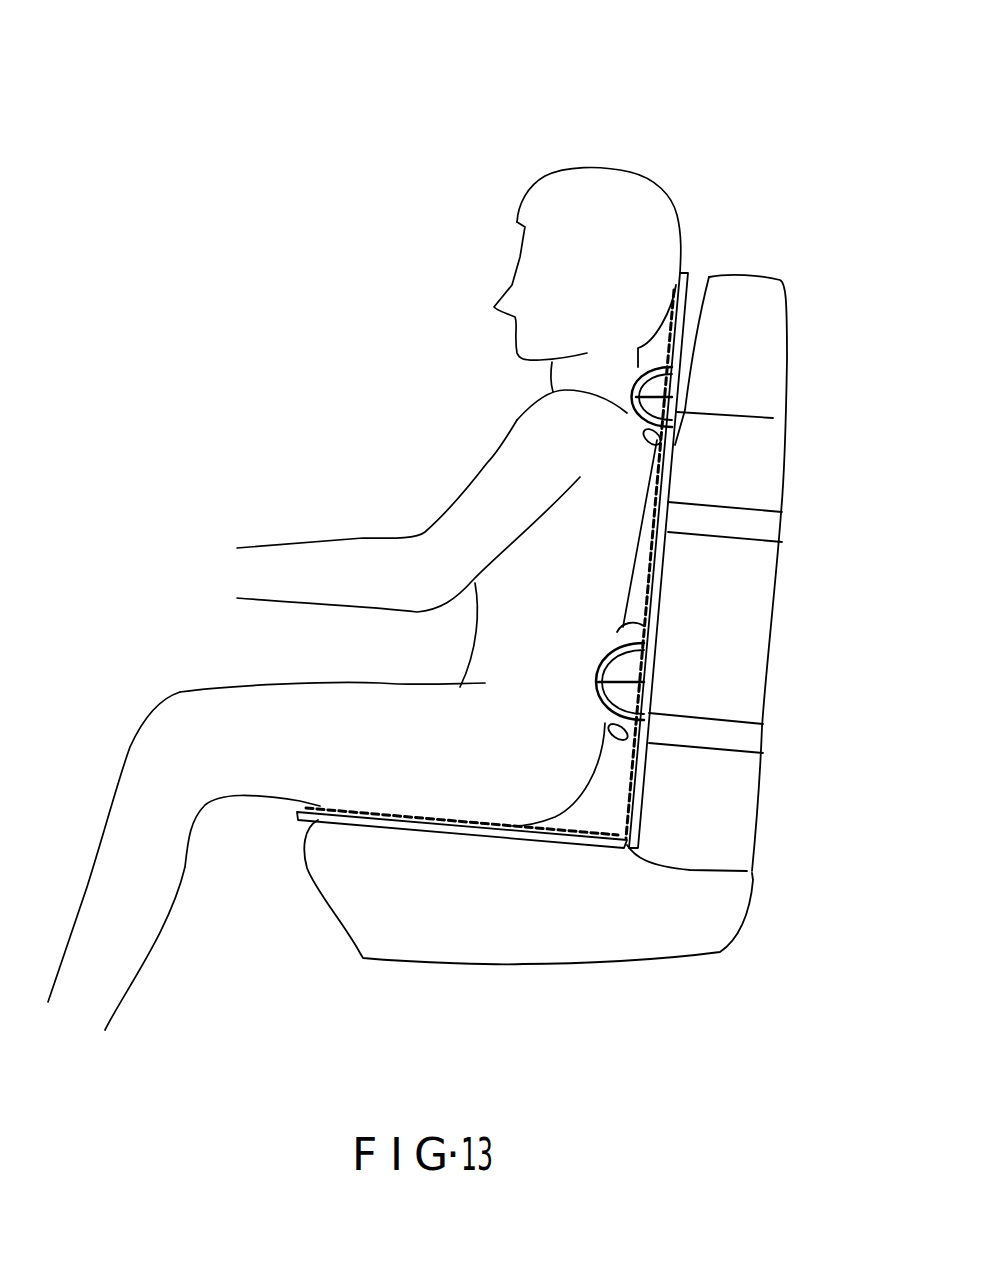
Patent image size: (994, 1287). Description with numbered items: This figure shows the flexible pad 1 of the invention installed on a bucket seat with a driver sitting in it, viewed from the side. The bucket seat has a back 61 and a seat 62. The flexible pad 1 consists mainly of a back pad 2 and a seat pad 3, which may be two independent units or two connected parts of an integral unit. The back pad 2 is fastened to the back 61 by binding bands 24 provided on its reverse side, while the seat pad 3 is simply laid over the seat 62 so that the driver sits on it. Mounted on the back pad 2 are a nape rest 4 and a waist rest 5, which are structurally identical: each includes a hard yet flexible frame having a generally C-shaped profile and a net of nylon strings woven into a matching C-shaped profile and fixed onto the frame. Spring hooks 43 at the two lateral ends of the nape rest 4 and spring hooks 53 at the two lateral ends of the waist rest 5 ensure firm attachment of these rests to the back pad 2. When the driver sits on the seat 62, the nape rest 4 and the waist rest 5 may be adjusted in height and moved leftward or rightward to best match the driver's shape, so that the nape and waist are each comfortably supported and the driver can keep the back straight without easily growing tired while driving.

The flexible pad 1 is at (727, 108).
The back pad 2 is at (625, 508).
The seat pad 3 is at (394, 785).
The nape rest 4 is at (613, 369).
The spring hooks 43 is at (655, 394).
The waist rest 5 is at (569, 672).
The spring hooks 53 is at (632, 676).
The binding bands 24 is at (773, 530).
The back 61 is at (765, 612).
The seat 62 is at (530, 935).